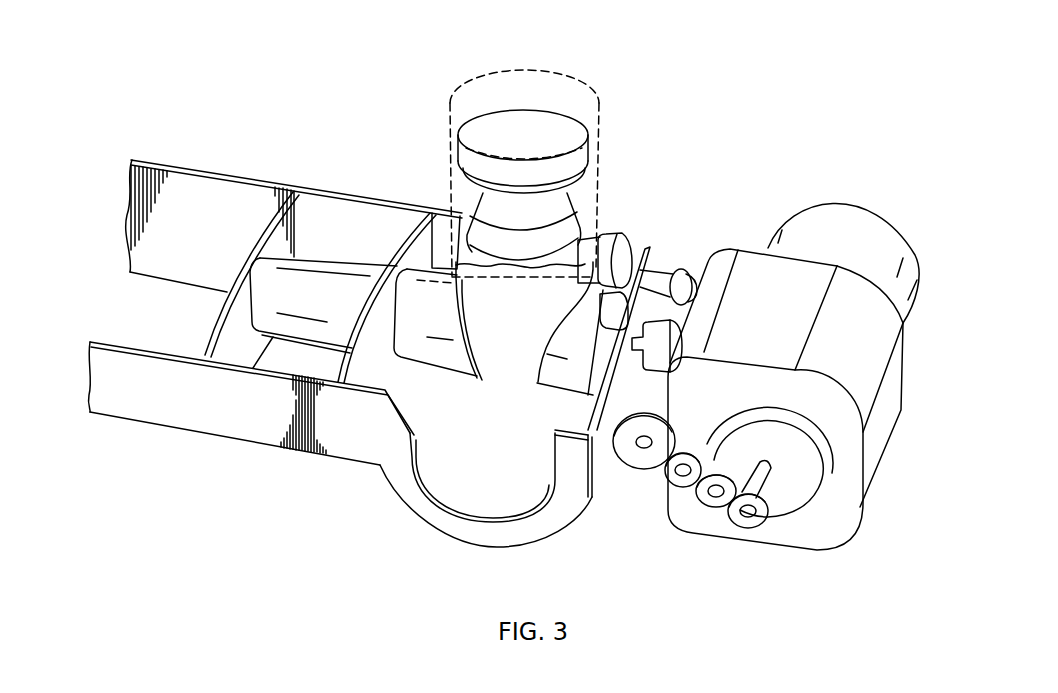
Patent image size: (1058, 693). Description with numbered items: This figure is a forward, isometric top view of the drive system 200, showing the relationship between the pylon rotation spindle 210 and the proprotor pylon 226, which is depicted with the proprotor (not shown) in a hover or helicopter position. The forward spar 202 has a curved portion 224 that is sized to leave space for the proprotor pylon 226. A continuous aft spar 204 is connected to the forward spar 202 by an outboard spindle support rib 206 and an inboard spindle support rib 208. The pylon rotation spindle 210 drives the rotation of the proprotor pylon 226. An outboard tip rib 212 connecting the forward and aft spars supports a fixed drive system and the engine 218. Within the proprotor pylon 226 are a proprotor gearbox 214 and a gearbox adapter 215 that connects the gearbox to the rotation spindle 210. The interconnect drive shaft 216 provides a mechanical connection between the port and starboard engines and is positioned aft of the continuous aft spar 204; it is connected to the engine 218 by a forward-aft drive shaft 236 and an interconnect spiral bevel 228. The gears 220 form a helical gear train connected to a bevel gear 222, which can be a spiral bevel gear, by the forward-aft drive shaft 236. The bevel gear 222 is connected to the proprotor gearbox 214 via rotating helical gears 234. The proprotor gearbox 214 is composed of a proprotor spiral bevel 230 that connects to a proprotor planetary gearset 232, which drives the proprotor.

The drive system 200 is at (773, 163).
The forward spar 202 is at (237, 420).
The continuous aft spar 204 is at (197, 193).
The outboard spindle support rib 206 is at (390, 374).
The inboard spindle support rib 208 is at (228, 340).
The pylon rotation spindle 210 is at (324, 258).
The outboard tip rib 212 is at (598, 463).
The proprotor gearbox 214 is at (511, 102).
The gearbox adapter 215 is at (498, 367).
The interconnect drive shaft 216 is at (662, 268).
The engine 218 is at (797, 535).
The gears 220 is at (690, 503).
The bevel gear 222 is at (688, 323).
The curved portion 224 is at (447, 552).
The proprotor pylon 226 is at (590, 93).
The interconnect spiral bevel 228 is at (698, 272).
The proprotor spiral bevel 230 is at (510, 247).
The proprotor planetary gearset 232 is at (534, 122).
The rotating helical gears 234 is at (616, 230).
The forward-aft drive shaft 236 is at (600, 393).